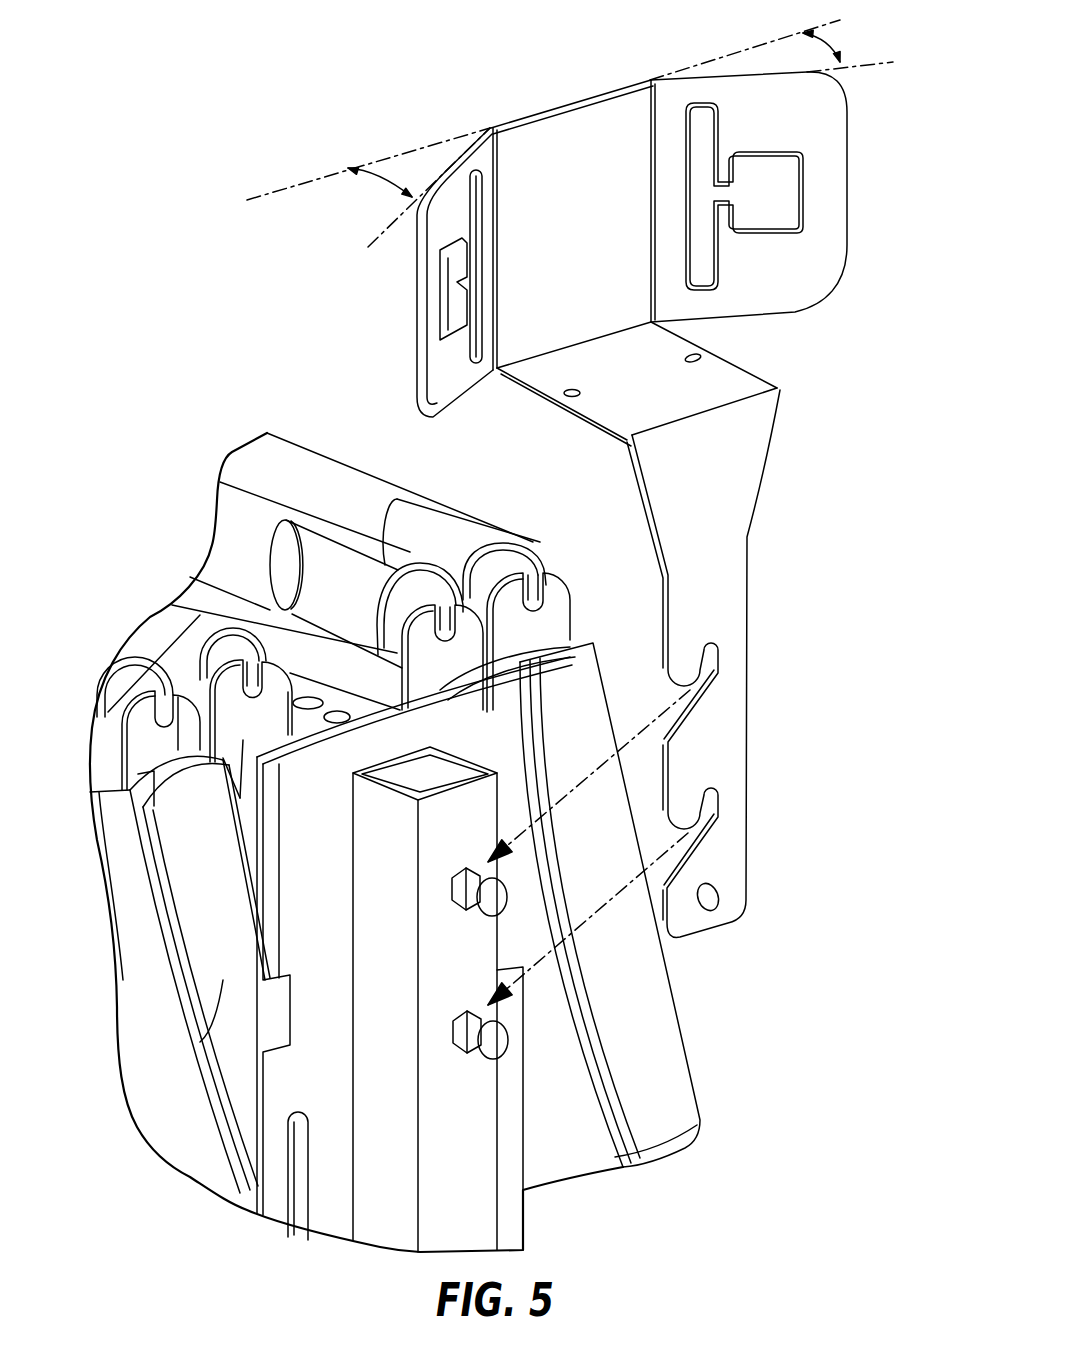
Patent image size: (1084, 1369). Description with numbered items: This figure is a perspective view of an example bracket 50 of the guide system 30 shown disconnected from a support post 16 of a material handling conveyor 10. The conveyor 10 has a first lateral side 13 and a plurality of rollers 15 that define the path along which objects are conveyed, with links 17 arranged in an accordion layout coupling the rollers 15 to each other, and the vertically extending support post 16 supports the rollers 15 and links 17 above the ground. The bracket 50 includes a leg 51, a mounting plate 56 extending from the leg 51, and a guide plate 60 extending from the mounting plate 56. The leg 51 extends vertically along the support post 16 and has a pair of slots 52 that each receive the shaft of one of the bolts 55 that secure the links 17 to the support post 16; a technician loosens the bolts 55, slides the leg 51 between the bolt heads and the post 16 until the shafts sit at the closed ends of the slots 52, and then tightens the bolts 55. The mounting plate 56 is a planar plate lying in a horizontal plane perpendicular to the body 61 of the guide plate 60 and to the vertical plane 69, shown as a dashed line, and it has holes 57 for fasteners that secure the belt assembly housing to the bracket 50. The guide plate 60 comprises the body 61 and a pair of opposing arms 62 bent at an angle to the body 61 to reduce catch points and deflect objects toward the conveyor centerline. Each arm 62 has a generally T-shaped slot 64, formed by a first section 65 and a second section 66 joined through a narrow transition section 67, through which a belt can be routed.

The material handling conveyor 10 is at (371, 850).
The first lateral side 13 is at (186, 1190).
The rollers 15 is at (260, 513).
The support post 16 is at (388, 1205).
The links 17 is at (255, 1008).
The system 30 is at (601, 512).
The bracket 50 is at (581, 512).
The leg 51 is at (653, 697).
The slots 52 is at (712, 660).
The bolts 55 is at (487, 895).
The mounting plate 56 is at (633, 408).
The holes 57 is at (703, 348).
The guide plate 60 is at (630, 239).
The body 61 is at (549, 150).
The arms 62 is at (443, 383).
The slot 64 is at (674, 227).
The first section 65 is at (797, 209).
The second section 66 is at (797, 191).
The transition section 67 is at (723, 187).
The vertical plane 69 is at (320, 178).